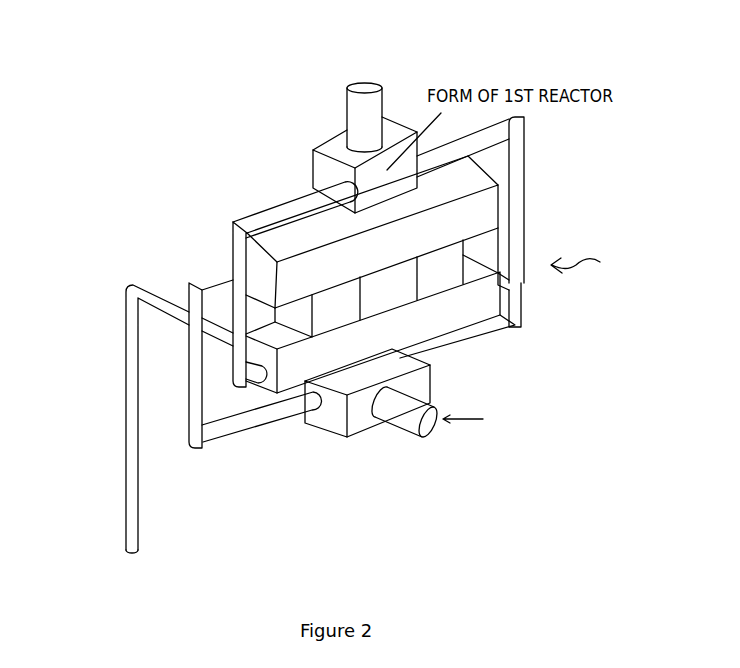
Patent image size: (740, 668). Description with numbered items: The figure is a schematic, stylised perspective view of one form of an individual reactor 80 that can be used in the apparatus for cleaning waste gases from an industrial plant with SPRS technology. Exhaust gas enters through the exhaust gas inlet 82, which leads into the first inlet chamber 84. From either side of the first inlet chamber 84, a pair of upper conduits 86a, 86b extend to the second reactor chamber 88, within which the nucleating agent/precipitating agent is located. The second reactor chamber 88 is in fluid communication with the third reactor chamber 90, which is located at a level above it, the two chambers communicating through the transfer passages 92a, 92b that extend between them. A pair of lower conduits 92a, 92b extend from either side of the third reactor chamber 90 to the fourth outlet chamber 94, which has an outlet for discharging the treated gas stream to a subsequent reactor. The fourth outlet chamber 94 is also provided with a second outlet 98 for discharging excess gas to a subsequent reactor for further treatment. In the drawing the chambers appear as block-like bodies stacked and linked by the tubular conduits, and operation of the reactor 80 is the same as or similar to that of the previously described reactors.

The reactor 80 is at (594, 264).
The exhaust gas inlet 82 is at (340, 112).
The first inlet chamber 84 is at (313, 170).
The upper conduit 86a is at (527, 153).
The upper conduit 86b is at (233, 248).
The second reactor chamber 88 is at (510, 328).
The third reactor chamber 90 is at (487, 212).
The transfer passage / lower conduit 92a is at (197, 404).
The transfer passage / lower conduit 92b is at (523, 305).
The fourth outlet chamber 94 is at (330, 418).
The second outlet 98 is at (131, 444).